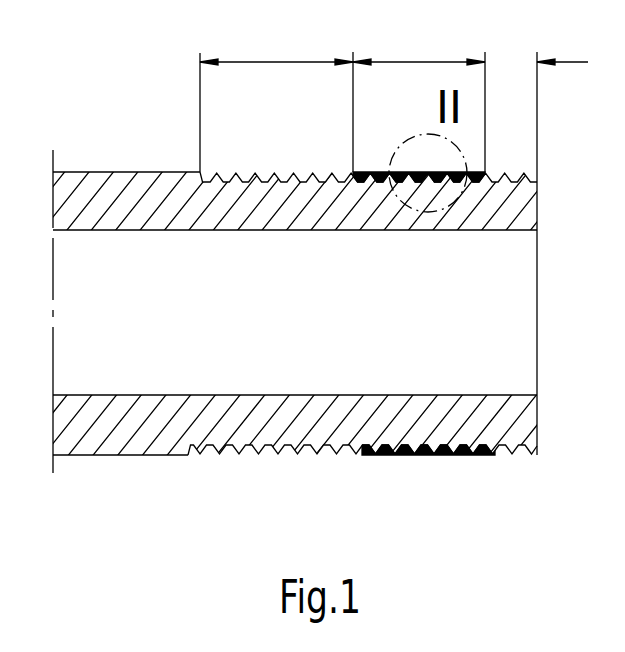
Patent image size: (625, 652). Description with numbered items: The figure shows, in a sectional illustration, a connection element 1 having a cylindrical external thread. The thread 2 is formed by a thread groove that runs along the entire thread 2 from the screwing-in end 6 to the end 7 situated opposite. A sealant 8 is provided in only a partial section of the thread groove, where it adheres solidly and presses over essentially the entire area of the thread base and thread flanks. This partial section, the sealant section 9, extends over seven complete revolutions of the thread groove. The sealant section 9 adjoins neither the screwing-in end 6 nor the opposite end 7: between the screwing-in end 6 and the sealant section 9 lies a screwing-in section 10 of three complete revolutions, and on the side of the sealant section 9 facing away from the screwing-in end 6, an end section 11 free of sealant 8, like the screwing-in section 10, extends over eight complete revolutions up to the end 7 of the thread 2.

The connection element 1 is at (88, 142).
The thread 2 is at (218, 445).
The screwing-in end 6 is at (540, 183).
The end of the thread 7 is at (193, 172).
The sealant 8 is at (465, 455).
The sealant section 9 is at (419, 46).
The screwing-in section 10 is at (562, 46).
The end section 11 is at (276, 46).